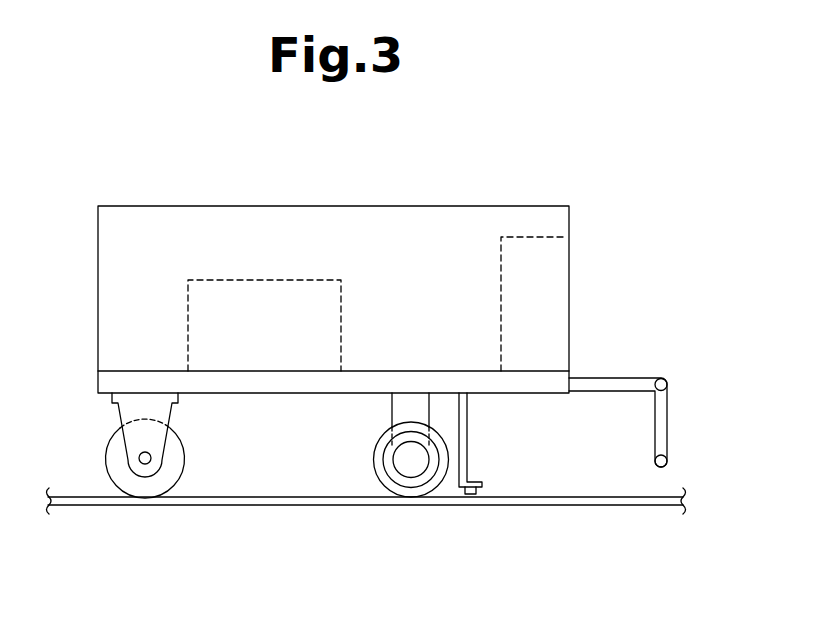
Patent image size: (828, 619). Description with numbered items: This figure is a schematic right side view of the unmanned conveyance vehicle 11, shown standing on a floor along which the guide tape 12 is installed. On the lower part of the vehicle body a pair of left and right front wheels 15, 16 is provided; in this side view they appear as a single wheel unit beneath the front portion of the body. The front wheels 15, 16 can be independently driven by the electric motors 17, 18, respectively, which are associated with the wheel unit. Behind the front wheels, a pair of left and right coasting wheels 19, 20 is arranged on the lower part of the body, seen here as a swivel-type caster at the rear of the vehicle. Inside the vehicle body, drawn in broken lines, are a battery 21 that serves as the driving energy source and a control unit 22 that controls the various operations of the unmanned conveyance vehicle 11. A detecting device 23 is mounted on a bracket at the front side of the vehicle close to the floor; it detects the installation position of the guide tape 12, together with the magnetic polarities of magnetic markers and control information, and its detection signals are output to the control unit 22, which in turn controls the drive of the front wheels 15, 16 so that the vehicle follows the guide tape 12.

The unmanned conveyance vehicle 11 is at (393, 204).
The guide tape 12 is at (635, 505).
The front wheel 15 is at (417, 487).
The front wheel 16 is at (417, 487).
The electric motor 17 is at (389, 490).
The electric motor 18 is at (383, 468).
The coasting wheel 19 is at (171, 479).
The coasting wheel 20 is at (181, 482).
The battery 21 is at (250, 280).
The control unit 22 is at (501, 256).
The detecting device 23 is at (478, 491).